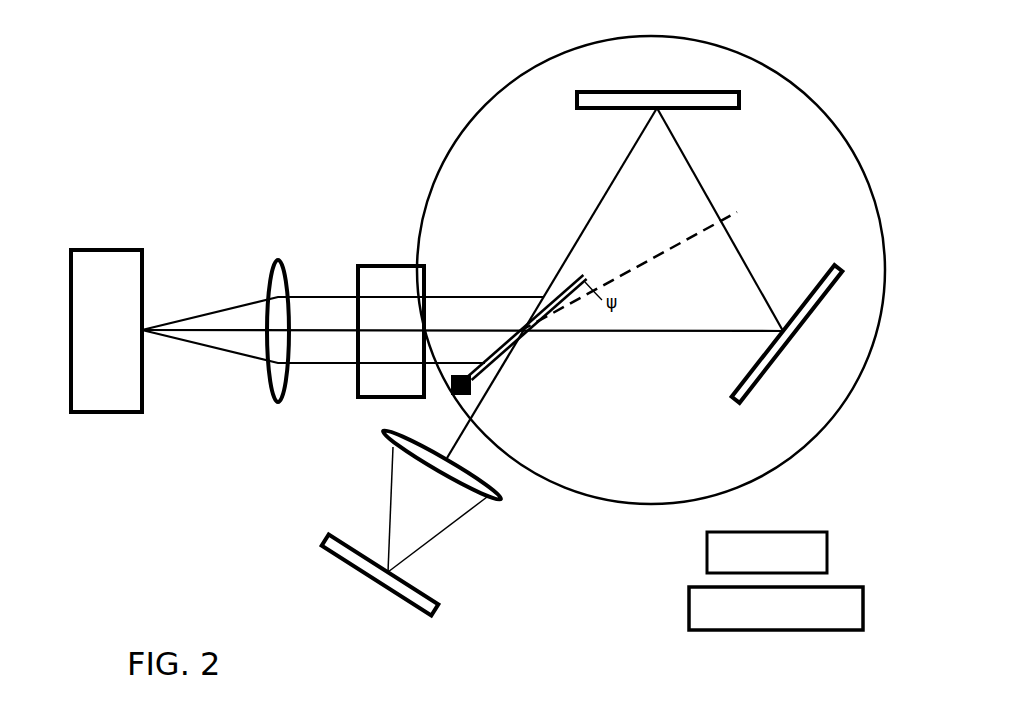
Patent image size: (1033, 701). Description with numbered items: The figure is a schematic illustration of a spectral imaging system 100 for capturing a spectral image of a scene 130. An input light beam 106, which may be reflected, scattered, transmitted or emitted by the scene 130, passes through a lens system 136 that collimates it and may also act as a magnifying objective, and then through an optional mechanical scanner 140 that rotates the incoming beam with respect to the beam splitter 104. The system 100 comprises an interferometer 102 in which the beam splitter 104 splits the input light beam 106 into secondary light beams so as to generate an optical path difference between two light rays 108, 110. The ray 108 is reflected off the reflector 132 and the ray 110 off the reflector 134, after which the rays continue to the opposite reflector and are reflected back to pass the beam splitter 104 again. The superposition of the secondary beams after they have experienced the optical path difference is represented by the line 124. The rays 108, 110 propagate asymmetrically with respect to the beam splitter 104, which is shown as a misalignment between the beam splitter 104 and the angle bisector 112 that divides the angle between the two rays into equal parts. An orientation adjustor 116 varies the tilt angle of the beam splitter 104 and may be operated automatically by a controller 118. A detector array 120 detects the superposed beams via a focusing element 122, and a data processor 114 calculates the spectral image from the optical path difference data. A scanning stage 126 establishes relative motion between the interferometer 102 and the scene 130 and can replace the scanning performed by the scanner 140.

The spectral imaging system 100 is at (238, 68).
The interferometer 102 is at (443, 90).
The beam splitter 104 is at (587, 272).
The input light beam 106 is at (208, 360).
The light ray 108 is at (568, 250).
The light ray 110 is at (598, 335).
The angle bisector 112 is at (682, 243).
The data processor 114 is at (700, 625).
The orientation adjustor 116 is at (461, 395).
The controller 118 is at (815, 538).
The detector array 120 is at (438, 608).
The focusing element 122 is at (505, 497).
The line representing superposition of secondary beams 124 is at (492, 383).
The scanning stage 126 is at (764, 68).
The scene 130 is at (106, 331).
The reflector 132 is at (628, 90).
The reflector 134 is at (773, 362).
The lens system 136 is at (271, 400).
The mechanical scanner 140 is at (386, 274).